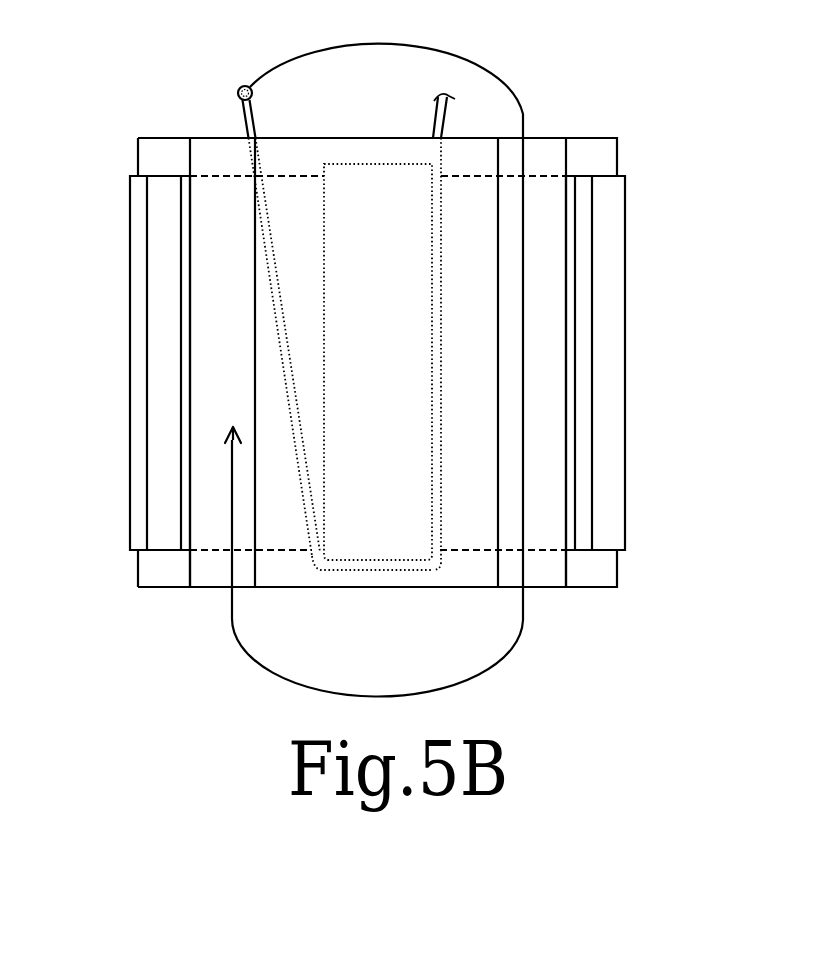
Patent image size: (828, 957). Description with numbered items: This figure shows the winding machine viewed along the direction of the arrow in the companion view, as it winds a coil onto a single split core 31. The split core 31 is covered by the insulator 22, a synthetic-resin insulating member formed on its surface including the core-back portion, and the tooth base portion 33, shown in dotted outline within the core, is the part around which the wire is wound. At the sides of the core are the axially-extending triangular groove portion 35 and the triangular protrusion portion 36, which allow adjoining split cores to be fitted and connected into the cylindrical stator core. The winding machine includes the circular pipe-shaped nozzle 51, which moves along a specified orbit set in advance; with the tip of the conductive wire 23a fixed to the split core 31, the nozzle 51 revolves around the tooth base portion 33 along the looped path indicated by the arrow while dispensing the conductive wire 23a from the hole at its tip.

The insulator 22 is at (592, 137).
The conductive wire 23a is at (438, 113).
The split core 31 is at (218, 193).
The tooth base portion 33 is at (378, 547).
The triangular groove portion 35 is at (612, 363).
The triangular protrusion portion 36 is at (138, 373).
The nozzle 51 is at (238, 87).